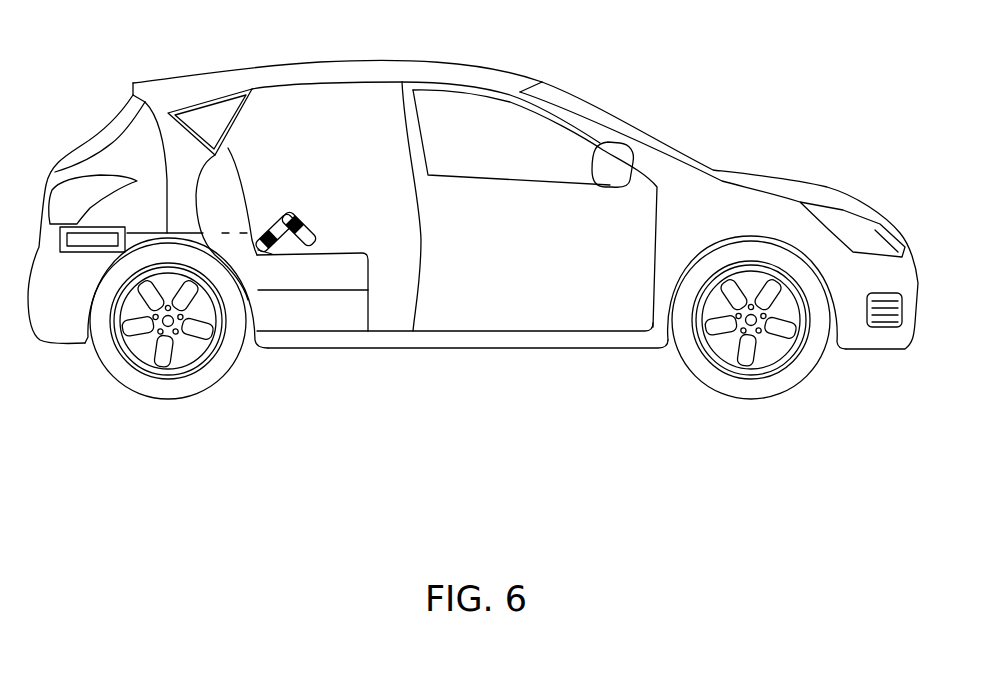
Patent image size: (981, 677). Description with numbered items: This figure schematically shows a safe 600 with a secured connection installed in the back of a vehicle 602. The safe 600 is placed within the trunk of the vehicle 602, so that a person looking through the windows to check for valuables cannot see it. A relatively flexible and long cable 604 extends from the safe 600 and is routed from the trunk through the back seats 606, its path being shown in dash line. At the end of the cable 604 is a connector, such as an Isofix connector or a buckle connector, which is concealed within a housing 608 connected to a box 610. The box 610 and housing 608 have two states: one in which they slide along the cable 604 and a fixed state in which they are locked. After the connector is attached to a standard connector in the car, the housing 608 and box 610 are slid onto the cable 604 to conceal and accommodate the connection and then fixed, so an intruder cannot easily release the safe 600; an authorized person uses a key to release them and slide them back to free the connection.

The safe 600 is at (92, 252).
The vehicle 602 is at (467, 392).
The cable 604 is at (163, 190).
The back seats 606 is at (236, 173).
The housing 608 is at (278, 252).
The box 610 is at (296, 255).